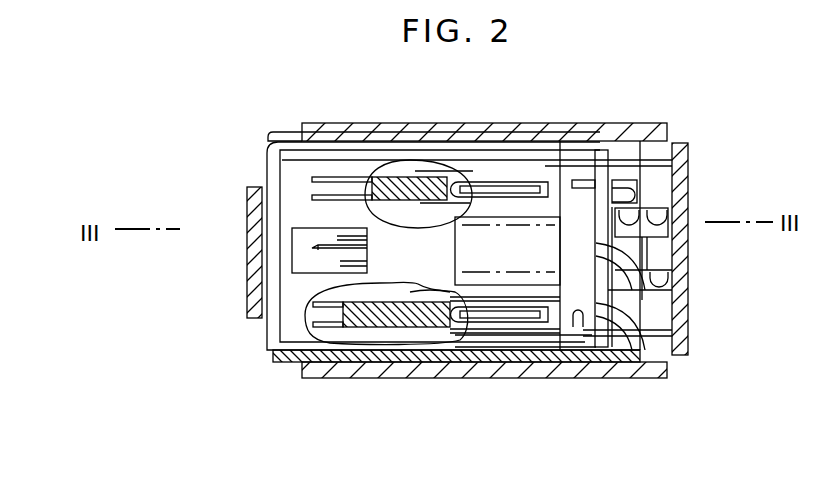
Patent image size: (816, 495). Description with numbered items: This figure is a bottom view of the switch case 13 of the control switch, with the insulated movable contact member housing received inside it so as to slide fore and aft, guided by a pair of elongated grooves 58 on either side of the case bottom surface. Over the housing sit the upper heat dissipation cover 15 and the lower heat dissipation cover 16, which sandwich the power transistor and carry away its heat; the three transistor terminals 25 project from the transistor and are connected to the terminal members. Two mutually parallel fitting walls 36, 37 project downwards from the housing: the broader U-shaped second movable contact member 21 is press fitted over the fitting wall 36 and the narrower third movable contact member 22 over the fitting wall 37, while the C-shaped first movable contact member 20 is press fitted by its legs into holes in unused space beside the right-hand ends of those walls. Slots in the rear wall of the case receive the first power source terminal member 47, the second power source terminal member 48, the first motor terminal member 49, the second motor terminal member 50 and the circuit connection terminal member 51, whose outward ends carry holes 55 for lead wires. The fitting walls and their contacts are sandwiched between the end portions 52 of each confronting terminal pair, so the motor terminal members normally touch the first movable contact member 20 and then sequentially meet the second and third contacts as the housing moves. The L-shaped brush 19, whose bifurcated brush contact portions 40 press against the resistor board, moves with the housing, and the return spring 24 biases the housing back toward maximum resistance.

The switch case 13 is at (267, 147).
The upper heat dissipation cover 15 is at (650, 123).
The lower heat dissipation cover 16 is at (588, 130).
The brush 19 is at (291, 240).
The first movable contact member 20 is at (460, 334).
The second movable contact member 21 is at (380, 200).
The third movable contact member 22 is at (293, 330).
The return spring 24 is at (600, 345).
The terminals 25 is at (645, 212).
The fitting wall 36 is at (407, 178).
The fitting wall 37 is at (378, 318).
The brush contact portions 40 is at (290, 270).
The first power source terminal member 47 is at (527, 185).
The second power source terminal member 48 is at (533, 343).
The first motor terminal member 49 is at (560, 150).
The second motor terminal member 50 is at (562, 287).
The circuit connection terminal member 51 is at (630, 197).
The end portions 52 is at (447, 165).
The holes 55 is at (655, 282).
The elongated grooves 58 is at (490, 182).